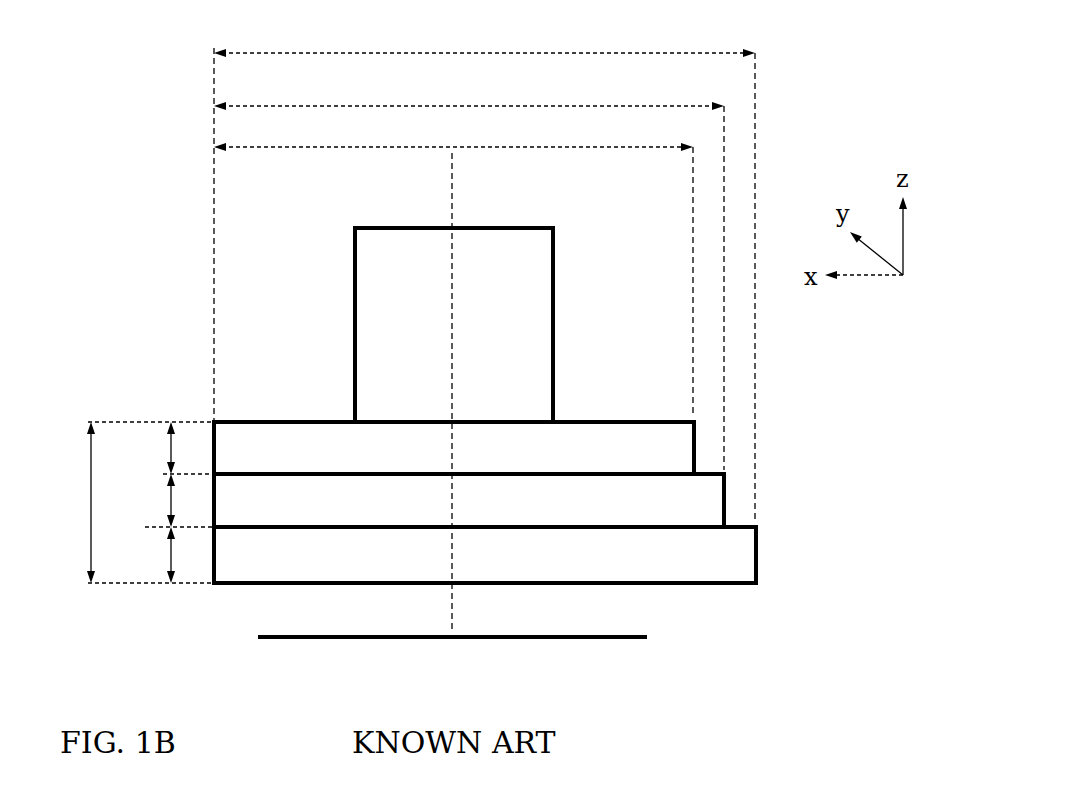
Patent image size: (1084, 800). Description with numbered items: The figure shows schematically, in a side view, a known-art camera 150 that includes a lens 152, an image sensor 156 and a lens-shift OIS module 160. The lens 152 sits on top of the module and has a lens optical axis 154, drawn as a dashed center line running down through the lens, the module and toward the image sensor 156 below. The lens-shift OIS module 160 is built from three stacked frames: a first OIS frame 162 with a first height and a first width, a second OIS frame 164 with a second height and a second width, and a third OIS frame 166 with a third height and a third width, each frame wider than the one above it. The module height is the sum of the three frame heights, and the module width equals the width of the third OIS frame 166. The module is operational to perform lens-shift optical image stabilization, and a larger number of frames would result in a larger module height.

The camera 150 is at (196, 205).
The lens 152 is at (561, 353).
The lens optical axis 154 is at (458, 205).
The image sensor 156 is at (658, 633).
The lens-shift OIS module 160 is at (580, 490).
The first OIS frame 162 is at (705, 440).
The second OIS frame 164 is at (738, 508).
The third OIS frame 166 is at (770, 567).